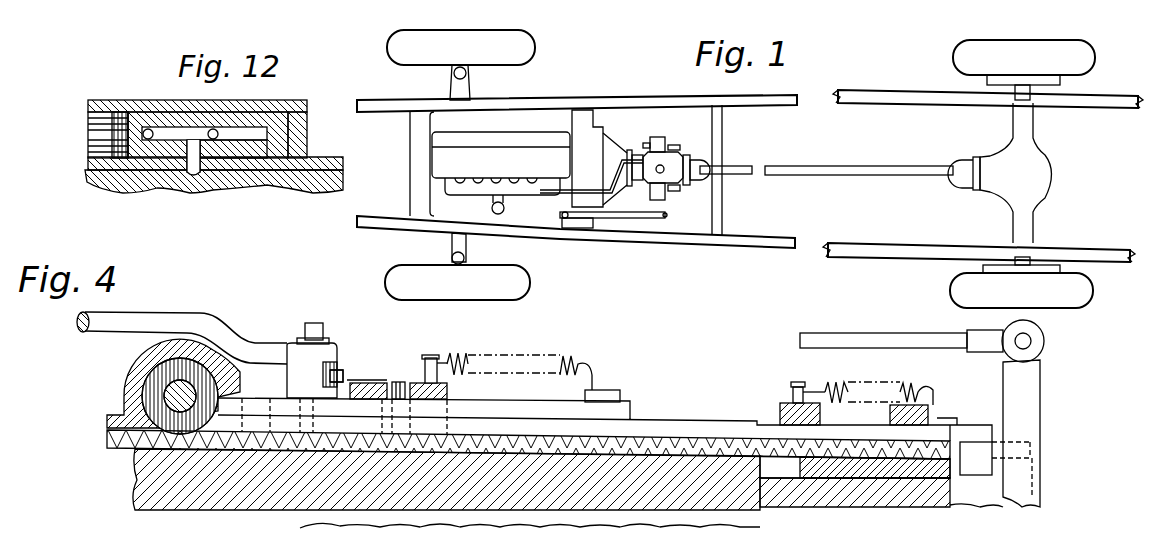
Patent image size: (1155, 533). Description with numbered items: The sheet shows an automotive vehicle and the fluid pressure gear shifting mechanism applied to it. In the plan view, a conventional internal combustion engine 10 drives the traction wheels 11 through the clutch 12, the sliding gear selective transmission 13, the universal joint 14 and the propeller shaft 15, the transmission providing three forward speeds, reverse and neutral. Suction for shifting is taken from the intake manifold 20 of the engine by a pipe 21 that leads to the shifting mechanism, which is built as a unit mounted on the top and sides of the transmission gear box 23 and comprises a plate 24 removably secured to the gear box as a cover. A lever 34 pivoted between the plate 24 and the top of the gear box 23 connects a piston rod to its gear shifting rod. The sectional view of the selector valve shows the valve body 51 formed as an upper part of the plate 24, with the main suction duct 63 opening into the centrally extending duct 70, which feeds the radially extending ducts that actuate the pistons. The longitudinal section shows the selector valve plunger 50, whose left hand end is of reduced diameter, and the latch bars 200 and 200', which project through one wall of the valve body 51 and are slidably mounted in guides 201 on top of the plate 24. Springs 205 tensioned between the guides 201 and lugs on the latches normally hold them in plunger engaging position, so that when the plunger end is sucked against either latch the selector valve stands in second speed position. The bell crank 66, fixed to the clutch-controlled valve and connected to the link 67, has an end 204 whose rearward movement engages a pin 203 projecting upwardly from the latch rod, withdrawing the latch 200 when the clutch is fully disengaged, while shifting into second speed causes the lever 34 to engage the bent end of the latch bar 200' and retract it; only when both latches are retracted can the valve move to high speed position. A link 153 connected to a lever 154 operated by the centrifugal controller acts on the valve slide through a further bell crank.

In FIG. 1, the internal combustion engine 10 is at (503, 160).
In FIG. 1, the traction wheels 11 is at (965, 58).
In FIG. 1, the clutch 12 is at (608, 148).
In FIG. 1, the sliding gear selective transmission 13 is at (656, 160).
In FIG. 1, the universal joint 14 is at (702, 170).
In FIG. 1, the propeller shaft 15 is at (738, 167).
In FIG. 1, the intake manifold 20 is at (528, 192).
In FIG. 1, the pipe 21 is at (612, 169).
In FIG. 12, the transmission gear box 23 is at (273, 190).
In FIG. 1, the transmission gear box 23 is at (686, 186).
In FIG. 4, the transmission gear box 23 is at (660, 468).
In FIG. 12, the plate 24 is at (322, 163).
In FIG. 4, the plate 24 is at (585, 458).
In FIG. 4, the lever 34 is at (878, 478).
In FIG. 12, the selector valve plunger 50 is at (140, 120).
In FIG. 4, the selector valve plunger 50 is at (162, 393).
In FIG. 12, the valve body 51 is at (245, 101).
In FIG. 4, the valve body 51 is at (134, 371).
In FIG. 12, the main duct 63 is at (180, 178).
In FIG. 4, the bell crank 66 is at (287, 380).
In FIG. 4, the link 67 is at (240, 336).
In FIG. 12, the centrally extending duct 70 is at (183, 126).
In FIG. 4, the link 153 is at (800, 338).
In FIG. 4, the lever 154 is at (1028, 388).
In FIG. 4, the latch bar 200 is at (605, 441).
In FIG. 4, the latch bar 200' is at (577, 427).
In FIG. 4, the guides 201 is at (448, 392).
In FIG. 4, the pin 203 is at (400, 382).
In FIG. 4, the end of bell crank 204 is at (370, 384).
In FIG. 4, the springs 205 is at (567, 358).